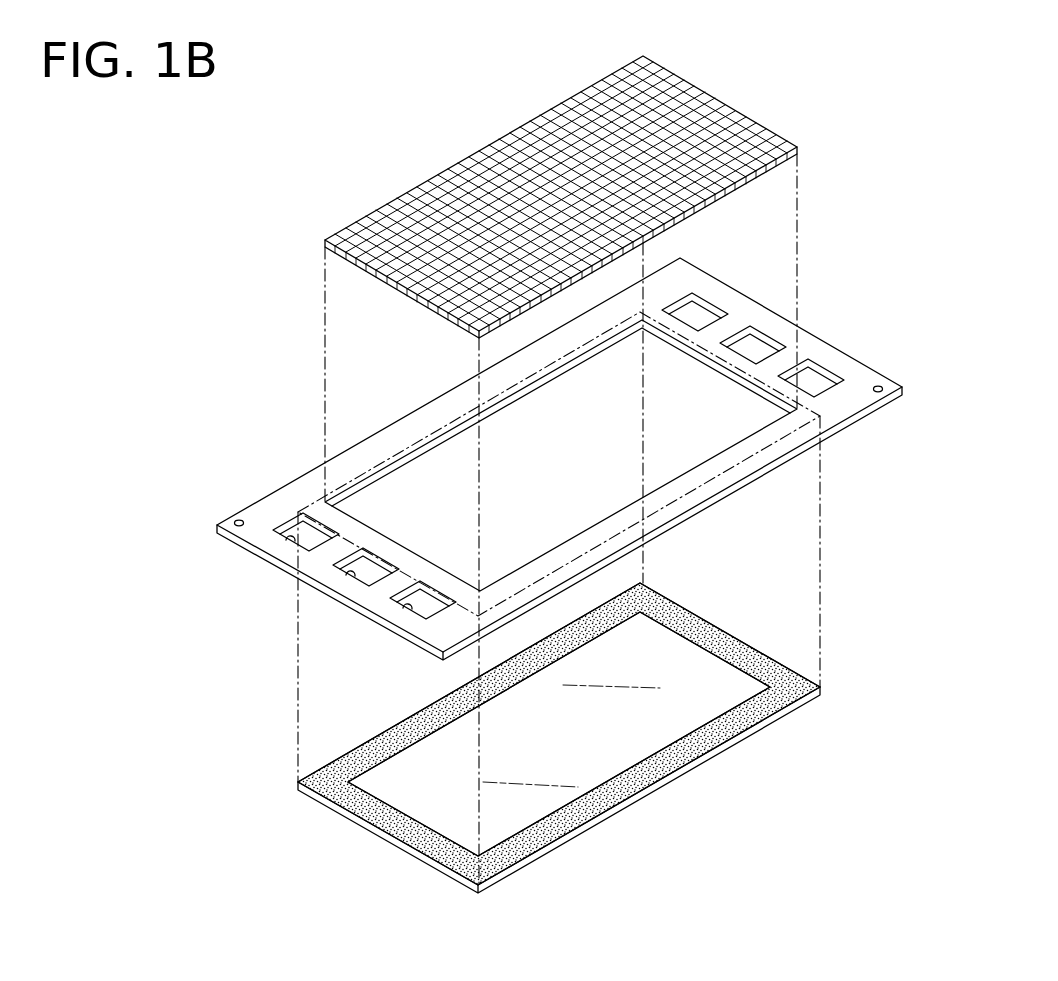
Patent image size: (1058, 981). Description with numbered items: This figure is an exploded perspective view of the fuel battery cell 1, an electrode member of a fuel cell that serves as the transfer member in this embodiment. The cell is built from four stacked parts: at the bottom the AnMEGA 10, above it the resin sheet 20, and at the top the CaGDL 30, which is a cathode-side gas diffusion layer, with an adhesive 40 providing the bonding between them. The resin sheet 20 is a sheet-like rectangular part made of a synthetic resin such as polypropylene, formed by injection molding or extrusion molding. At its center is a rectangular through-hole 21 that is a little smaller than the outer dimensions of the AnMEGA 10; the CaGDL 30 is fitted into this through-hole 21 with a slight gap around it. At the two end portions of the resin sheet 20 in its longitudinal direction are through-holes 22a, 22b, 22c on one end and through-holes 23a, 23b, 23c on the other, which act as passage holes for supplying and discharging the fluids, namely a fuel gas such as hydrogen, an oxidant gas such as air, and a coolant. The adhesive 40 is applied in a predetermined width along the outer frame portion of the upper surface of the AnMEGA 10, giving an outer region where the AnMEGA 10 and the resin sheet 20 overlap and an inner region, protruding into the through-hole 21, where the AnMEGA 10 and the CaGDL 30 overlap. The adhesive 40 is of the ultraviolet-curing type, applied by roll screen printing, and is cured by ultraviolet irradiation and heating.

The fuel battery cell 1 is at (317, 175).
The AnMEGA 10 is at (730, 745).
The resin sheet 20 is at (853, 375).
The through-hole 21 is at (438, 440).
The through-hole 22a is at (705, 302).
The through-hole 22b is at (763, 333).
The through-hole 22c is at (822, 366).
The through-hole 23a is at (292, 539).
The through-hole 23b is at (347, 574).
The through-hole 23c is at (412, 611).
The CaGDL 30 is at (702, 103).
The adhesive 40 is at (597, 803).